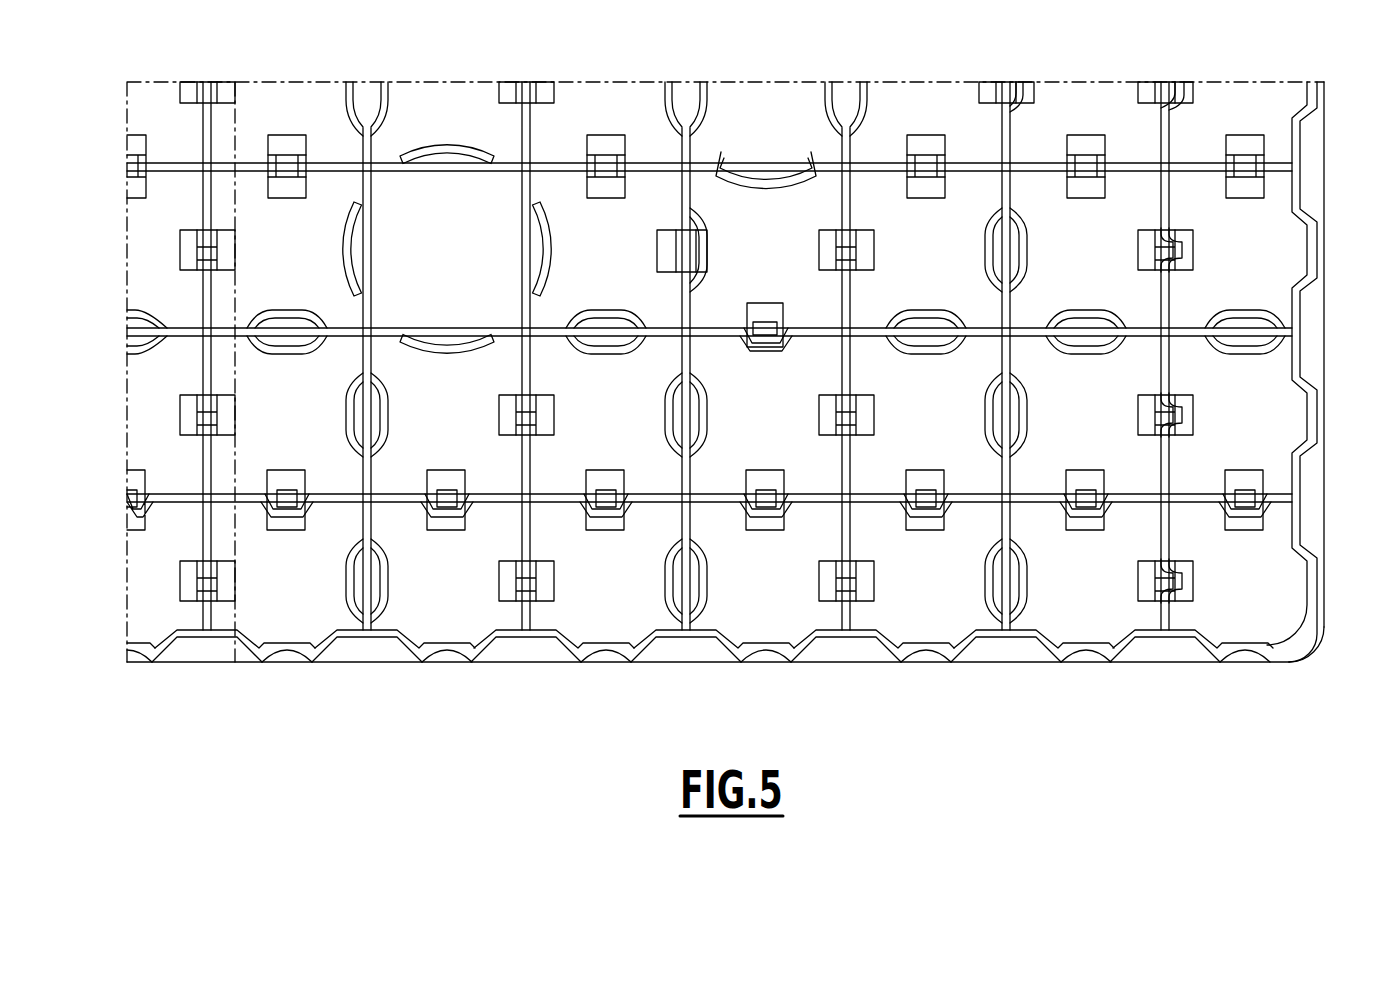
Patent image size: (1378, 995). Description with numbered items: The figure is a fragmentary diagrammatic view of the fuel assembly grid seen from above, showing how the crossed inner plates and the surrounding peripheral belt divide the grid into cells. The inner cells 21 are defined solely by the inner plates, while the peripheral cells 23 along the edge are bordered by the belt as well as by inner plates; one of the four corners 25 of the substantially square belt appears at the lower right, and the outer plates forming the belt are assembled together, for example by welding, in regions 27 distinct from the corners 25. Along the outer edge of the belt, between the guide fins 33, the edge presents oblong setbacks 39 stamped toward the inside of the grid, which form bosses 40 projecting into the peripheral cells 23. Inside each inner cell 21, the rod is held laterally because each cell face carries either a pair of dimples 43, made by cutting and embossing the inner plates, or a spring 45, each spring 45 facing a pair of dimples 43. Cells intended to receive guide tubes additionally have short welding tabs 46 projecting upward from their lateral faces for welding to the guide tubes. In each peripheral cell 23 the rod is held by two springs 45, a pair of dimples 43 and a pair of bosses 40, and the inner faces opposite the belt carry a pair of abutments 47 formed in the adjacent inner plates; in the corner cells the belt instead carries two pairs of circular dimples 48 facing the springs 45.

The inner cells 21 is at (1120, 222).
The peripheral cells 23 is at (1273, 377).
The corners 25 is at (1303, 643).
The regions 27 is at (1005, 655).
The guide fins 33 is at (1040, 655).
The setbacks 39 is at (1100, 655).
The bosses 40 is at (612, 637).
The dimples 43 is at (702, 582).
The springs 45 is at (1247, 520).
The welding tabs 46 is at (427, 327).
The abutments 47 is at (1180, 578).
The circular dimples 48 is at (1313, 582).